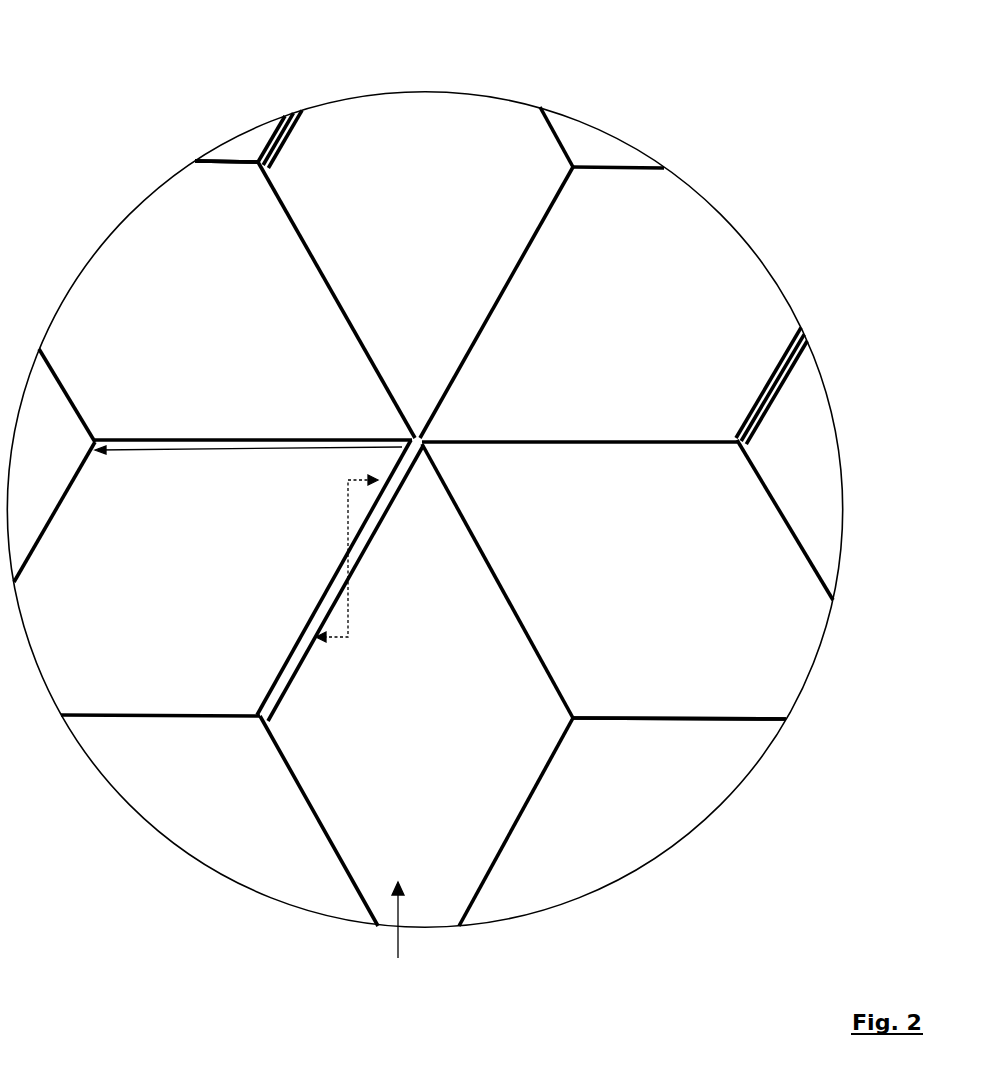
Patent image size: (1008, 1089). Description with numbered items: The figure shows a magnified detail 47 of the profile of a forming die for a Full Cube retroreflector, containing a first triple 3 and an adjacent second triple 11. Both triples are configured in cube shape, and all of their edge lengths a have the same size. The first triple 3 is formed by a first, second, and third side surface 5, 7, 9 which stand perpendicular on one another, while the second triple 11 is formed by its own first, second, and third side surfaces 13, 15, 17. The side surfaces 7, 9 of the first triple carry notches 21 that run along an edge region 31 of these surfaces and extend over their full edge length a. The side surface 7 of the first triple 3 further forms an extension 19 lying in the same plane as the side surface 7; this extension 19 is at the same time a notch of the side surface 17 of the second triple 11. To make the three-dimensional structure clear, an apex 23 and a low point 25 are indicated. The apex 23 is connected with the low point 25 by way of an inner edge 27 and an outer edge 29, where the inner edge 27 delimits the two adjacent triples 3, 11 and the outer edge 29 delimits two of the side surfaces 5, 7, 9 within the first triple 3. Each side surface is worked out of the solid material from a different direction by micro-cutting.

The first triple 3 is at (432, 128).
The first side surface of the first triple 5 is at (175, 268).
The second side surface of the first triple 7 is at (410, 128).
The third side surface of the first triple 9 is at (233, 150).
The second triple 11 is at (395, 934).
The first side surface of the second triple 13 is at (200, 808).
The second side surface of the second triple 15 is at (430, 818).
The third side surface of the second triple 17 is at (119, 672).
The extension 19 is at (263, 720).
The notches 21 is at (264, 167).
The apex 23 is at (258, 163).
The low point 25 is at (574, 722).
The inner edge 27 is at (540, 217).
The outer edge 29 is at (385, 515).
The edge region 31 is at (338, 640).
The magnified detail 47 is at (622, 142).
The edge length a is at (130, 452).